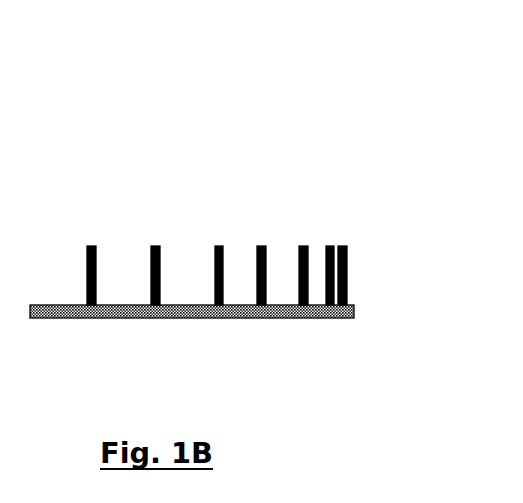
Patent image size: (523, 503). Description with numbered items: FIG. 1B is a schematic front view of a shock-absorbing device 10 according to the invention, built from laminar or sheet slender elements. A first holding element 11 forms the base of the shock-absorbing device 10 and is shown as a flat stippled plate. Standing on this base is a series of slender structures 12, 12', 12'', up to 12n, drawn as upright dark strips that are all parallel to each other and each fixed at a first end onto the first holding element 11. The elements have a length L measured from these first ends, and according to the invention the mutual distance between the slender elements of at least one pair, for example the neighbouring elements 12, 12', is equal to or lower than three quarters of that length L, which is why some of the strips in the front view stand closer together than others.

The shock-absorbing device 10 is at (207, 162).
The first holding element 11 is at (30, 318).
The slender structure 12 is at (352, 237).
The slender structure 12' is at (314, 217).
The slender structure 12'' is at (268, 247).
The slender structure 12n is at (91, 247).